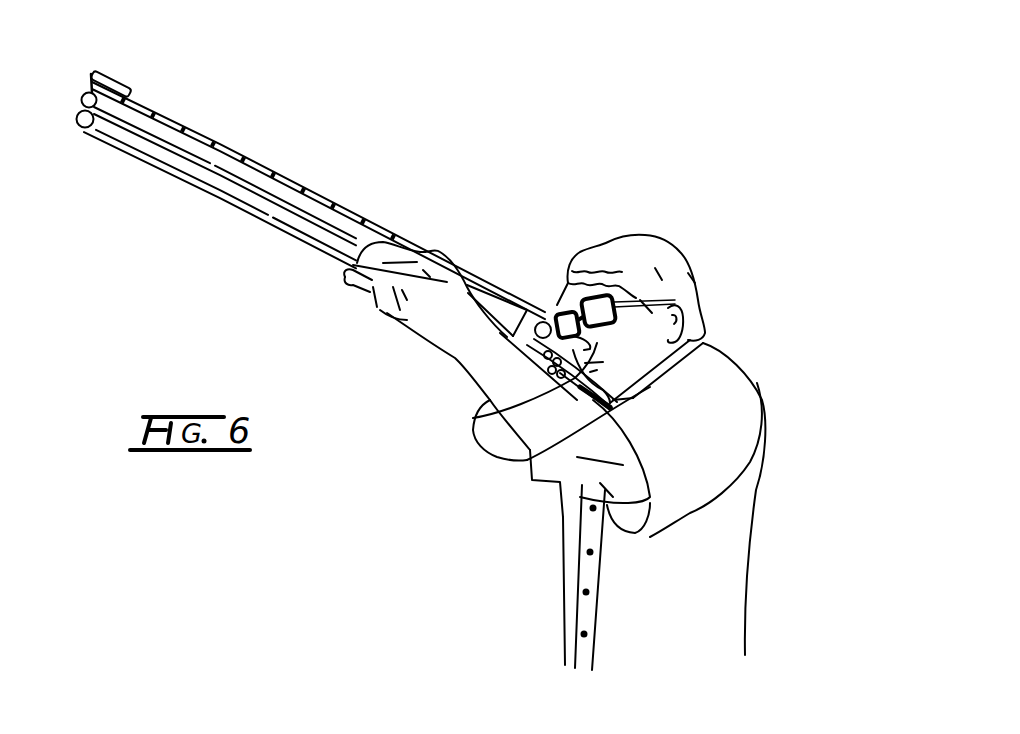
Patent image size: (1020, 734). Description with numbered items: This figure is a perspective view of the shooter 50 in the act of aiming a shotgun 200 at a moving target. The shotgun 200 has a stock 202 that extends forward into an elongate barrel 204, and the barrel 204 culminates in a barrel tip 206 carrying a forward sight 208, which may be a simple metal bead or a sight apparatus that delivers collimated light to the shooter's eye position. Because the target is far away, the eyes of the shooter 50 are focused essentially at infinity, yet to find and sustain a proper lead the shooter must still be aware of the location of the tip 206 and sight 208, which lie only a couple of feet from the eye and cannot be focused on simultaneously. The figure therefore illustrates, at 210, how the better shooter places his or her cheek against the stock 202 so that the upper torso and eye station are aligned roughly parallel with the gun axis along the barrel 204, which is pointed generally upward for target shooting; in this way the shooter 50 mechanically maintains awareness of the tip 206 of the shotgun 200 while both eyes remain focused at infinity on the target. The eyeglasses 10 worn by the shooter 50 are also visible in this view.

The eyeglasses 10 is at (632, 293).
The shooter 50 is at (617, 250).
The shotgun 200 is at (497, 287).
The stock 202 is at (510, 460).
The barrel 204 is at (292, 226).
The barrel tip 206 is at (84, 93).
The forward sight 208 is at (112, 80).
The cheek placement against stock 210 is at (475, 417).